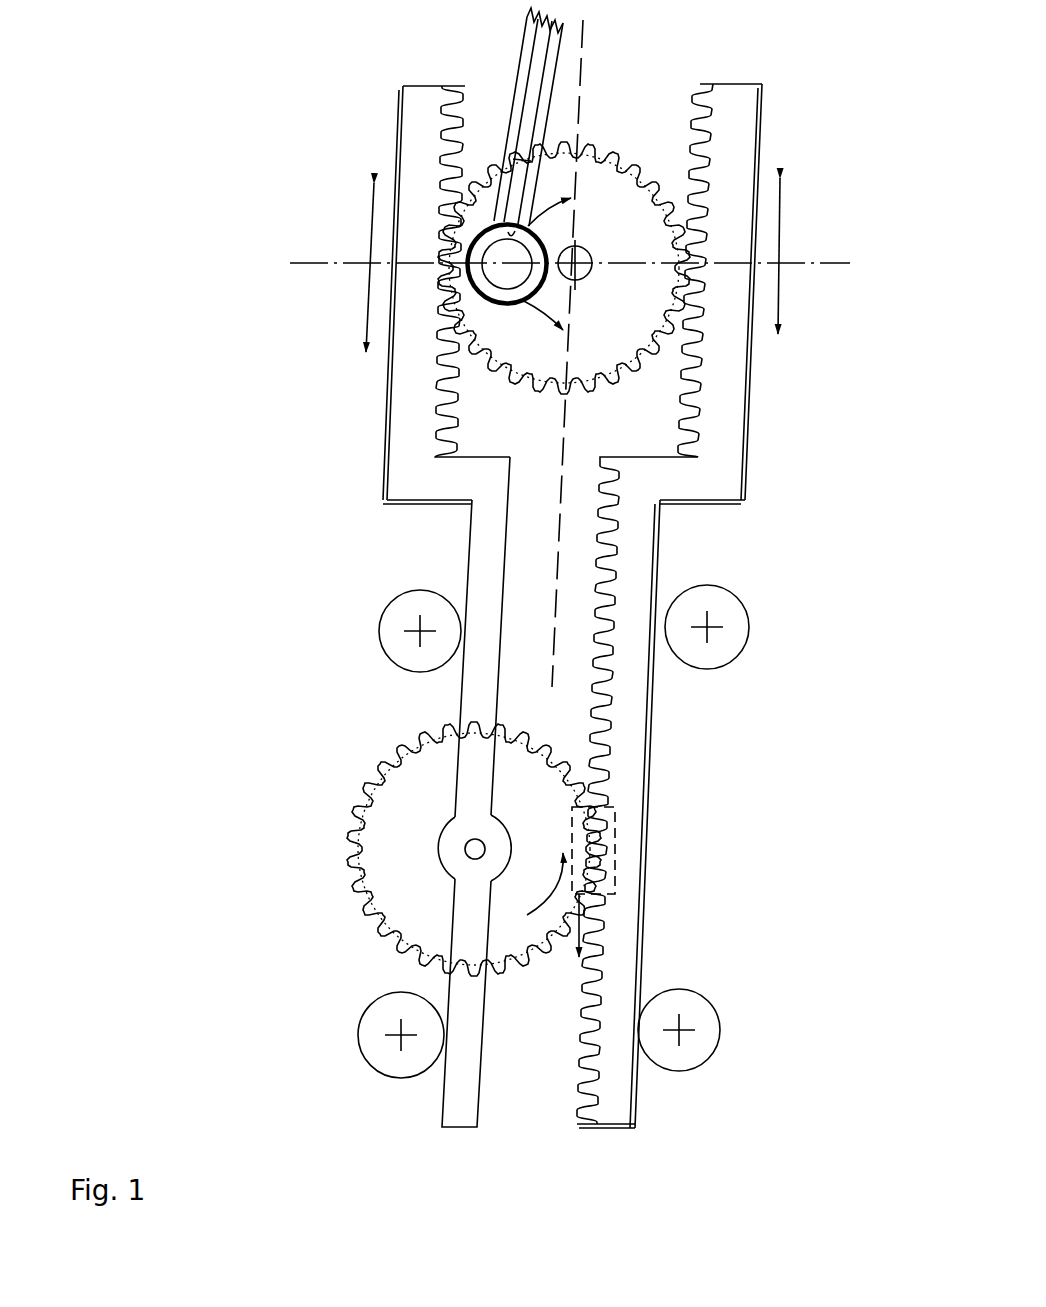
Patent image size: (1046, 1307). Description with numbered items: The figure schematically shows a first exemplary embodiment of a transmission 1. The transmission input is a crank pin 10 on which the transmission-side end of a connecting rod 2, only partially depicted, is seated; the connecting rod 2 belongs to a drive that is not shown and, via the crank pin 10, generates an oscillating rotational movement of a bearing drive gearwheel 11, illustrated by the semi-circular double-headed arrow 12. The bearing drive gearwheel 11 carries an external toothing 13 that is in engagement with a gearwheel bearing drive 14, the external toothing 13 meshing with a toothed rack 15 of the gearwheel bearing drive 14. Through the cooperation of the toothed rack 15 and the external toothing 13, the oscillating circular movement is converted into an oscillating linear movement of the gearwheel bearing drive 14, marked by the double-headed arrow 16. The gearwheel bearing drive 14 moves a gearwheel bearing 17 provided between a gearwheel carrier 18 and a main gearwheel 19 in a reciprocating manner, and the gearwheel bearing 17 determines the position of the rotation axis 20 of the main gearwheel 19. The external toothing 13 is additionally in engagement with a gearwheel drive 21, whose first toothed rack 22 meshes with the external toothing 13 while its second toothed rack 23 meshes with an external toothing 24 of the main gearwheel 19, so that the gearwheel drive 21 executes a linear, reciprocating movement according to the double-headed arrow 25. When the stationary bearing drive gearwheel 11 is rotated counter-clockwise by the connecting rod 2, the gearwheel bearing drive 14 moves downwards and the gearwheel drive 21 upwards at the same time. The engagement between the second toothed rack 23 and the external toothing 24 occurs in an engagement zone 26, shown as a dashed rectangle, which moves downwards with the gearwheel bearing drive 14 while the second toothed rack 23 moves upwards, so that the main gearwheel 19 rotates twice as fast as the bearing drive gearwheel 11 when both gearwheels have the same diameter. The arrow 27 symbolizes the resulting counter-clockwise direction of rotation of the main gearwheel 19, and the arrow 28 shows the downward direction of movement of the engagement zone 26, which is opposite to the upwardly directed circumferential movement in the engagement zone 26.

The transmission 1 is at (250, 762).
The connecting rod 2 is at (552, 169).
The crank pin 10 is at (443, 268).
The bearing drive gearwheel 11 is at (497, 330).
The semi-circular double-headed arrow 12 is at (546, 218).
The external toothing 13 is at (690, 413).
The gearwheel bearing drive 14 is at (389, 792).
The toothed rack 15 is at (442, 442).
The double-headed arrow 16 is at (370, 246).
The gearwheel bearing 17 is at (450, 877).
The gearwheel carrier 18 is at (440, 840).
The main gearwheel 19 is at (347, 853).
The rotation axis 20 is at (453, 833).
The gearwheel drive 21 is at (654, 710).
The first toothed rack 22 is at (700, 402).
The second toothed rack 23 is at (601, 973).
The external toothing 24 is at (387, 943).
The double-headed arrow 25 is at (783, 300).
The engagement zone 26 is at (617, 844).
The arrow 27 is at (544, 891).
The arrow 28 is at (597, 919).